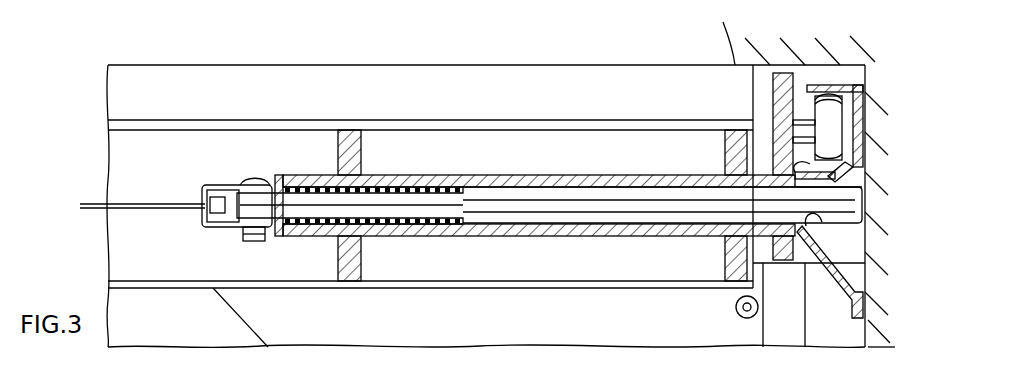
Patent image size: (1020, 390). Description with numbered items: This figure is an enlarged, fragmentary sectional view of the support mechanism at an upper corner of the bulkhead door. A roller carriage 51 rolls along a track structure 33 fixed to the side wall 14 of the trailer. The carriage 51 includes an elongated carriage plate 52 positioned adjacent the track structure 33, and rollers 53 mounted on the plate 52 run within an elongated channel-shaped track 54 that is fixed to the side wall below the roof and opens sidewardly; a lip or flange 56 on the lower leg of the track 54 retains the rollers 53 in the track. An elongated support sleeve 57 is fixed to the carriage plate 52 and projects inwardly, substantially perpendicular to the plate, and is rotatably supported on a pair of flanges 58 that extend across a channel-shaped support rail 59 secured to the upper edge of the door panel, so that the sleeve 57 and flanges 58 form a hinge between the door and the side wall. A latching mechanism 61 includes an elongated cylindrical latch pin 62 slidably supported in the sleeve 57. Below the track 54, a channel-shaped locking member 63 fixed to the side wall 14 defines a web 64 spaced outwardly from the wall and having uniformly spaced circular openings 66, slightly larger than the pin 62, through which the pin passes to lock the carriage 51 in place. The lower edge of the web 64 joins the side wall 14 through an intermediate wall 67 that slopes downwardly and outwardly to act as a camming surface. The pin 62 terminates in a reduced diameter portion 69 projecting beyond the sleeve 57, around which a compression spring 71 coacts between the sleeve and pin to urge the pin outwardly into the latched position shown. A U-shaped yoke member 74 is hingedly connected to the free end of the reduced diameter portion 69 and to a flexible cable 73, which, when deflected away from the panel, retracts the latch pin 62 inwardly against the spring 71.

The side wall 14 is at (880, 80).
The track structure 33 is at (876, 203).
The roller carriage 51 is at (771, 81).
The carriage plate 52 is at (783, 110).
The rollers 53 is at (820, 110).
The channel-shaped track 54 is at (862, 110).
The lip or flange 56 is at (797, 172).
The support sleeve 57 is at (612, 232).
The flanges 58 is at (357, 148).
The support rail 59 is at (521, 118).
The latching mechanism 61 is at (405, 240).
The latch pin 62 is at (568, 226).
The locking member 63 is at (860, 180).
The web or wall portion 64 is at (798, 190).
The openings 66 is at (818, 245).
The intermediate wall 67 is at (855, 270).
The reduced diameter portion 69 is at (310, 200).
The compression spring 71 is at (392, 186).
The flexible cable 73 is at (120, 200).
The yoke member 74 is at (216, 228).